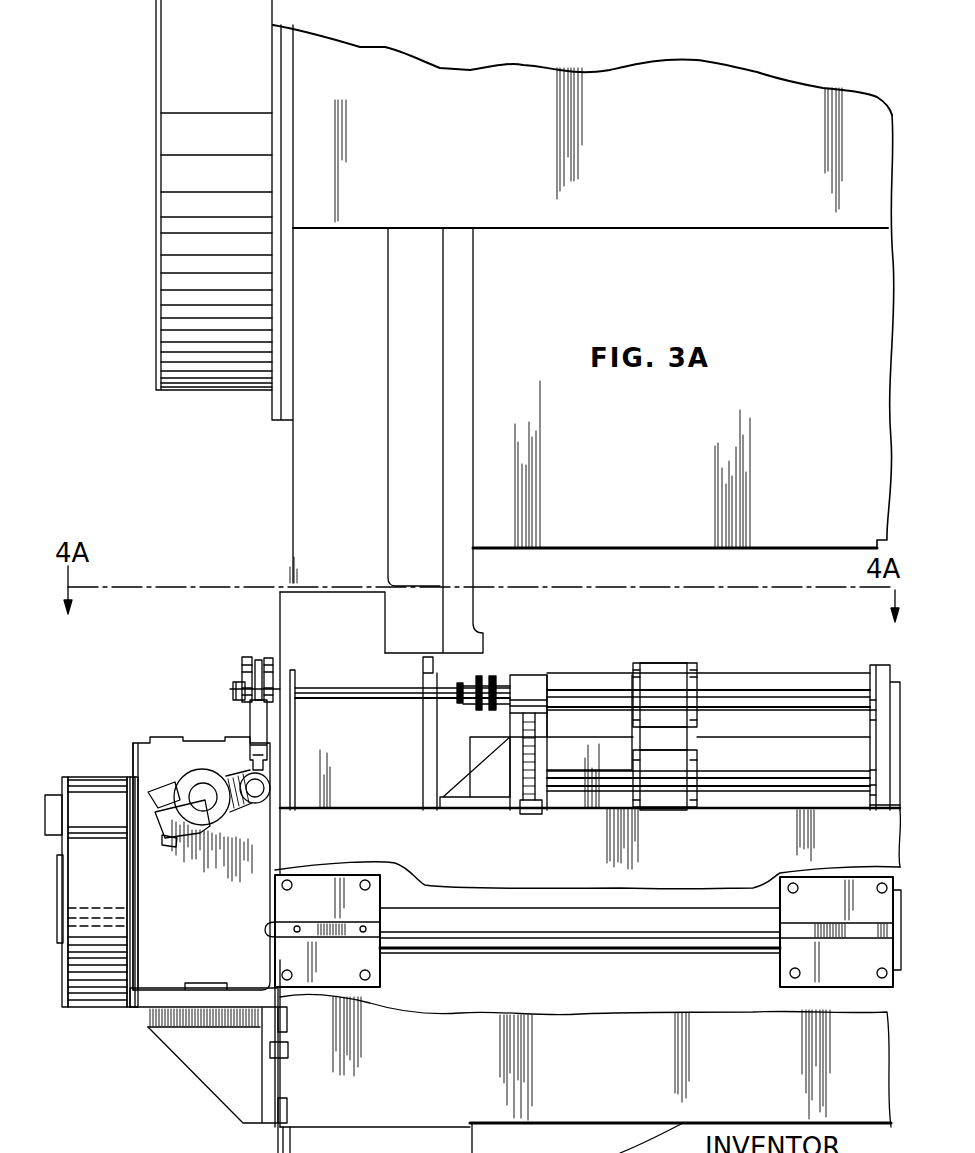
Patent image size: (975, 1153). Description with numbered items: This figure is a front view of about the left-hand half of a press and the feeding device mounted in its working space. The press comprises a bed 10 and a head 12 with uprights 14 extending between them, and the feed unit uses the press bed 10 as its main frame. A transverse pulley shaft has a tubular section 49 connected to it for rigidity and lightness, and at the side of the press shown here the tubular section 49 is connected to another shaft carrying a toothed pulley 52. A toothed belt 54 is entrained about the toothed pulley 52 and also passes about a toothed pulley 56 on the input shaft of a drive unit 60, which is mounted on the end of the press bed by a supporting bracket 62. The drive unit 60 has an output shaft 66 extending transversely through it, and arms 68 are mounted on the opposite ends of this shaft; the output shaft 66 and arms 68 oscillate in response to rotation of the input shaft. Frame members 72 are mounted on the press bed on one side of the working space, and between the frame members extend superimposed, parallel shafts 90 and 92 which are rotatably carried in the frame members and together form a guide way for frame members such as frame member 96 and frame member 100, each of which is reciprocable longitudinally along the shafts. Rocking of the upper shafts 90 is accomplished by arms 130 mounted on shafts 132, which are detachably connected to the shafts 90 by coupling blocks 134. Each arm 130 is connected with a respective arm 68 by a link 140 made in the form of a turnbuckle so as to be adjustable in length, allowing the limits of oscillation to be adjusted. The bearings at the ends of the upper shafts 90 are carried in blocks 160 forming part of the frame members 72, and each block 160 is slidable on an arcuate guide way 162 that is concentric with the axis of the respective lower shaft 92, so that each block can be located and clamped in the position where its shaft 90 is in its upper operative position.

The bed 10 is at (770, 806).
The head 12 is at (613, 85).
The uprights 14 is at (298, 326).
The tubular section 49 is at (577, 940).
The toothed pulley 52 is at (63, 988).
The toothed belt 54 is at (108, 1005).
The toothed pulley 56 is at (55, 875).
The drive unit 60 is at (165, 962).
The supporting bracket 62 is at (203, 1068).
The output shaft 66 is at (196, 796).
The arms 68 is at (205, 783).
The frame members 72 is at (490, 802).
The shafts 90 is at (600, 690).
The shafts 92 is at (598, 787).
The frame member 96 is at (668, 797).
The frame member 100 is at (890, 807).
The arms 130 is at (250, 656).
The shafts 132 is at (353, 698).
The coupling blocks 134 is at (462, 708).
The link 140 is at (250, 718).
The blocks 160 is at (527, 678).
The arcuate guide way 162 is at (540, 815).